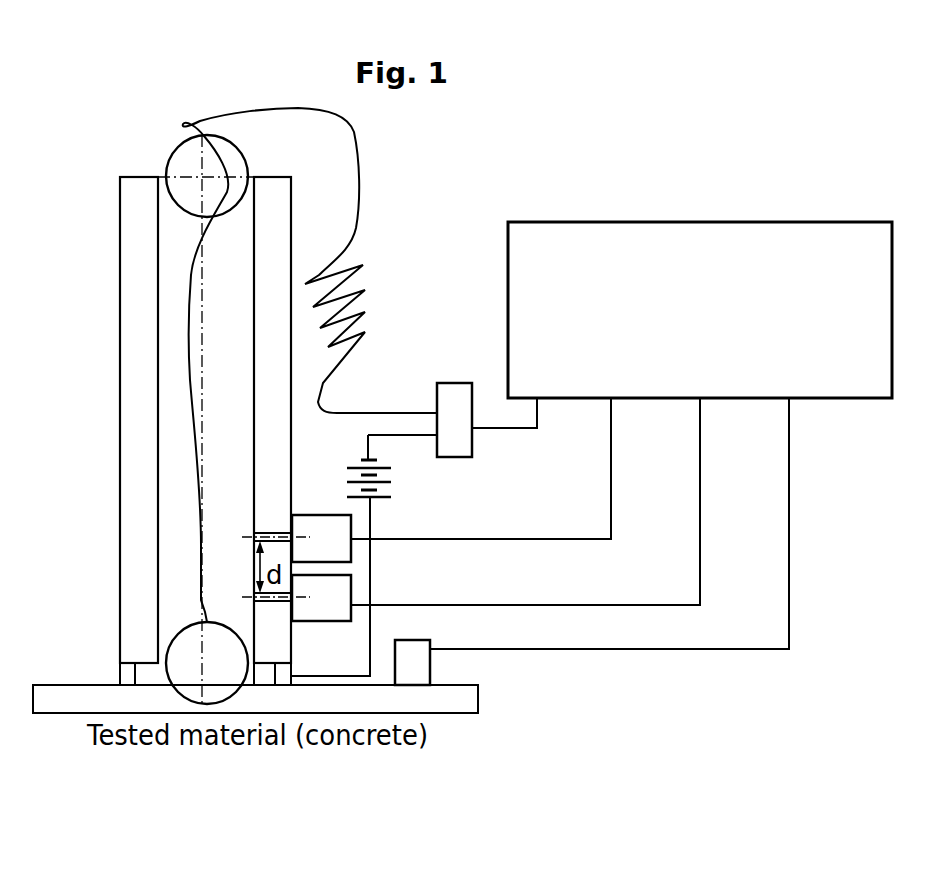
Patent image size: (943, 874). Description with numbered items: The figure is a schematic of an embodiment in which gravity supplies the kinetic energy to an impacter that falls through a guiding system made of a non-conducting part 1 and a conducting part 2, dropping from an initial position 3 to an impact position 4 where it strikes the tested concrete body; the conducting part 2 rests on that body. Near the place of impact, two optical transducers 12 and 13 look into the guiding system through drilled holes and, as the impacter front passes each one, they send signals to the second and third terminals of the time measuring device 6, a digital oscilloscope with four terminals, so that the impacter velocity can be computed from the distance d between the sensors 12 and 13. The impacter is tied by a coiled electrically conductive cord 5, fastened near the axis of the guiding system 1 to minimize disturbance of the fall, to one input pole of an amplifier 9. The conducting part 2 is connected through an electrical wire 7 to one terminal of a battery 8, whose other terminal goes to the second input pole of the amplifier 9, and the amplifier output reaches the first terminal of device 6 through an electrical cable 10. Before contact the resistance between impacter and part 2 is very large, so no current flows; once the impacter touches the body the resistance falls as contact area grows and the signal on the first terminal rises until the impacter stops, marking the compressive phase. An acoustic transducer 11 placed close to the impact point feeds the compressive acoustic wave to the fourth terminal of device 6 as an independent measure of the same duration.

The non-conducting part of guiding system 1 is at (120, 252).
The conducting part of guiding system 2 is at (118, 672).
The initial position 3 is at (167, 148).
The impact position 4 is at (173, 618).
The electrically conductive cord 5 is at (367, 127).
The time measuring device 6 is at (494, 302).
The electrical wire 7 is at (395, 576).
The battery 8 is at (409, 495).
The amplifier 9 is at (420, 420).
The electrical cable 10 is at (520, 445).
The acoustic transducer 11 is at (592, 541).
The optical transducer 12 is at (451, 480).
The optical transducer 13 is at (496, 509).